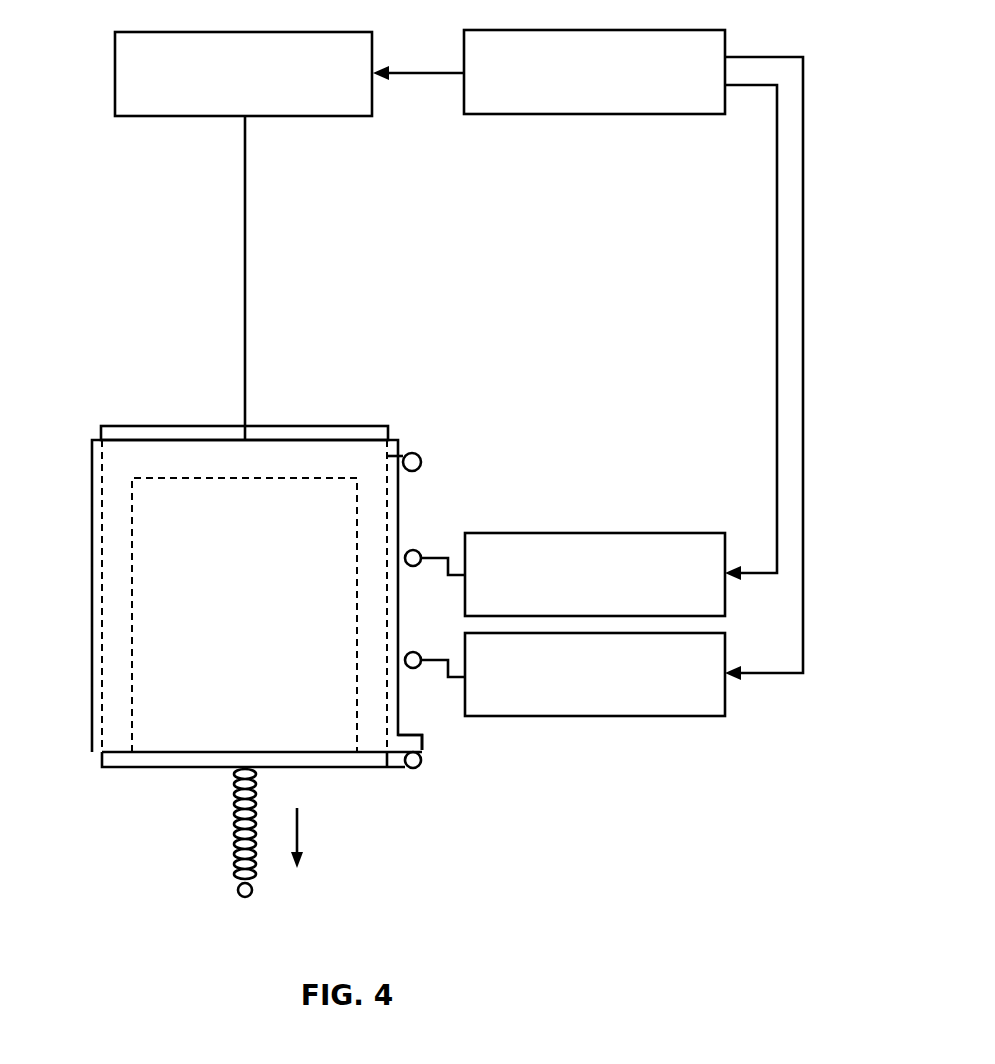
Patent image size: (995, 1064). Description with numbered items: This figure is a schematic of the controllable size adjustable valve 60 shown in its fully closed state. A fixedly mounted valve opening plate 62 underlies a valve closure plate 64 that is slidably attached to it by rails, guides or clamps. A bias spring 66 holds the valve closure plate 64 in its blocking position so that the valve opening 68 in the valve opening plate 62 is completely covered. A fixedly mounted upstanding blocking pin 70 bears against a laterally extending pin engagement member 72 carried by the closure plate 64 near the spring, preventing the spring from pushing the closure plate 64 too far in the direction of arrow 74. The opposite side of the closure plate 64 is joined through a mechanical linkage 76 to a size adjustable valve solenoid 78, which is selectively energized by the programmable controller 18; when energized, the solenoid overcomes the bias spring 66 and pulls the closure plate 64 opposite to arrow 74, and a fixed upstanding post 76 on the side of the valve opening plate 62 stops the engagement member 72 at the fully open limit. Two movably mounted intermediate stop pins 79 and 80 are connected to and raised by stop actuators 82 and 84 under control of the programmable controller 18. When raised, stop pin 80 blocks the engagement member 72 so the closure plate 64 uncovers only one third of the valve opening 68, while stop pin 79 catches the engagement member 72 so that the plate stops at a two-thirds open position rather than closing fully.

The programmable controller 18 is at (524, 30).
The controllable size adjustable valve 60 is at (116, 144).
The valve opening plate 62 is at (110, 760).
The valve closure plate 64 is at (333, 440).
The bias spring 66 is at (235, 835).
The valve opening 68 is at (357, 682).
The blocking pin 70 is at (411, 767).
The pin engagement member 72 is at (402, 734).
The arrow 74 is at (300, 830).
The mechanical linkage 76 is at (245, 245).
The size adjustable valve solenoid 78 is at (174, 32).
The intermediate stop pin 79 is at (417, 550).
The intermediate stop pin 80 is at (417, 652).
The stop actuator 82 is at (668, 533).
The stop actuator 84 is at (668, 716).